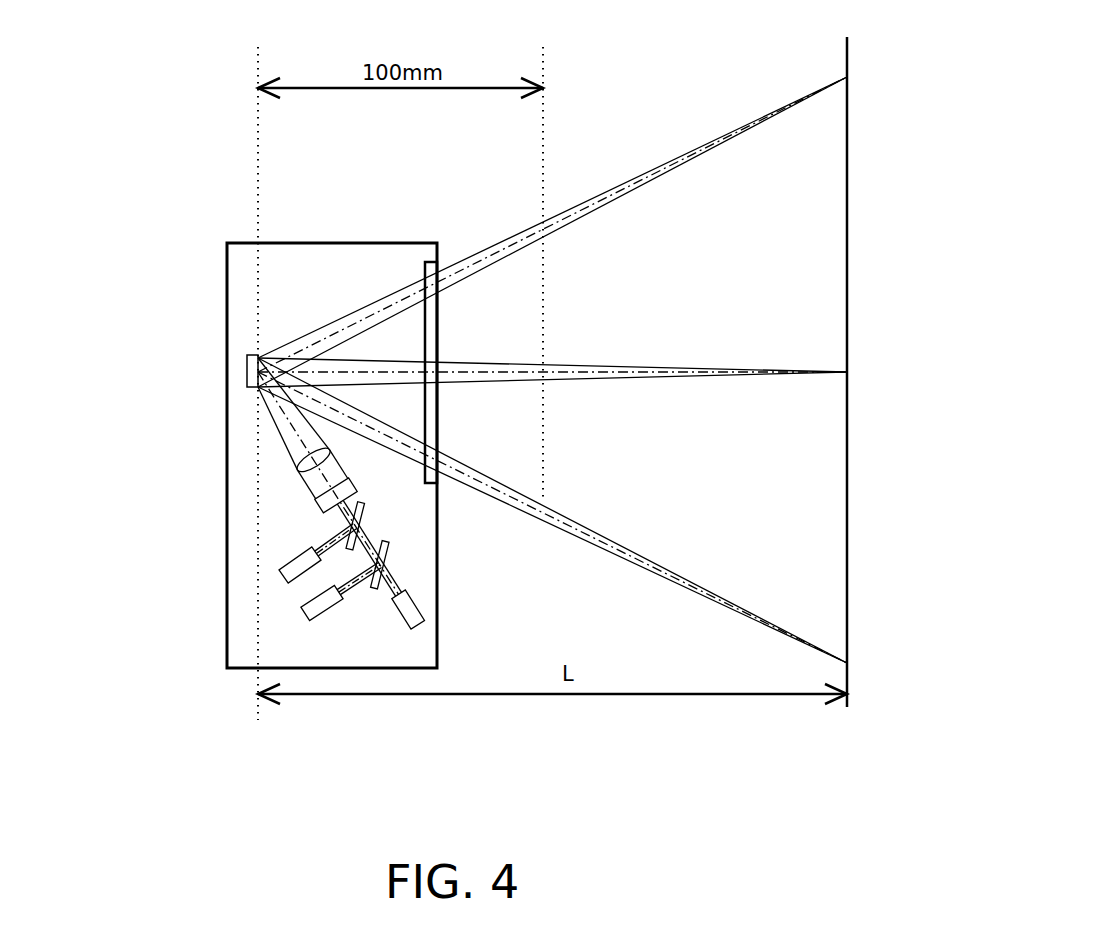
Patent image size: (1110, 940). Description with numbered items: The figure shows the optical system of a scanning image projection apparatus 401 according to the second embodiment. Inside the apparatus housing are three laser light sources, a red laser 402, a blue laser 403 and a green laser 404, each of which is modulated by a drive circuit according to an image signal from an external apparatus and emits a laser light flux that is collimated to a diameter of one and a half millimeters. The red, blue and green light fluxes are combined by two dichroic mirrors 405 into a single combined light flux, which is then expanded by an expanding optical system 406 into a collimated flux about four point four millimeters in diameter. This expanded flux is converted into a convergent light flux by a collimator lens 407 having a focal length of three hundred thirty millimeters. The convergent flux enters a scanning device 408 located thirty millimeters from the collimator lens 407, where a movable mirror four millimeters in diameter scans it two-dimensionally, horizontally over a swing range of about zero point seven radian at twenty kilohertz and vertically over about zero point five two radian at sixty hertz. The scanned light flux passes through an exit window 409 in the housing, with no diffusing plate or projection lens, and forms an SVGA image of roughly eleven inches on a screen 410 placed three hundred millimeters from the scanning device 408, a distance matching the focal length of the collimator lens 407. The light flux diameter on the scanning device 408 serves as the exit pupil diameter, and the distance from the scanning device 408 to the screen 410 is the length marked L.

The scanning image projection apparatus 401 is at (203, 242).
The red laser 402 is at (278, 567).
The blue laser 403 is at (305, 608).
The green laser 404 is at (415, 627).
The dichroic mirrors 405 is at (367, 518).
The expanding optical system 406 is at (330, 502).
The collimator lens 407 is at (300, 466).
The scanning device 408 is at (247, 382).
The exit window 409 is at (438, 262).
The screen 410 is at (847, 52).